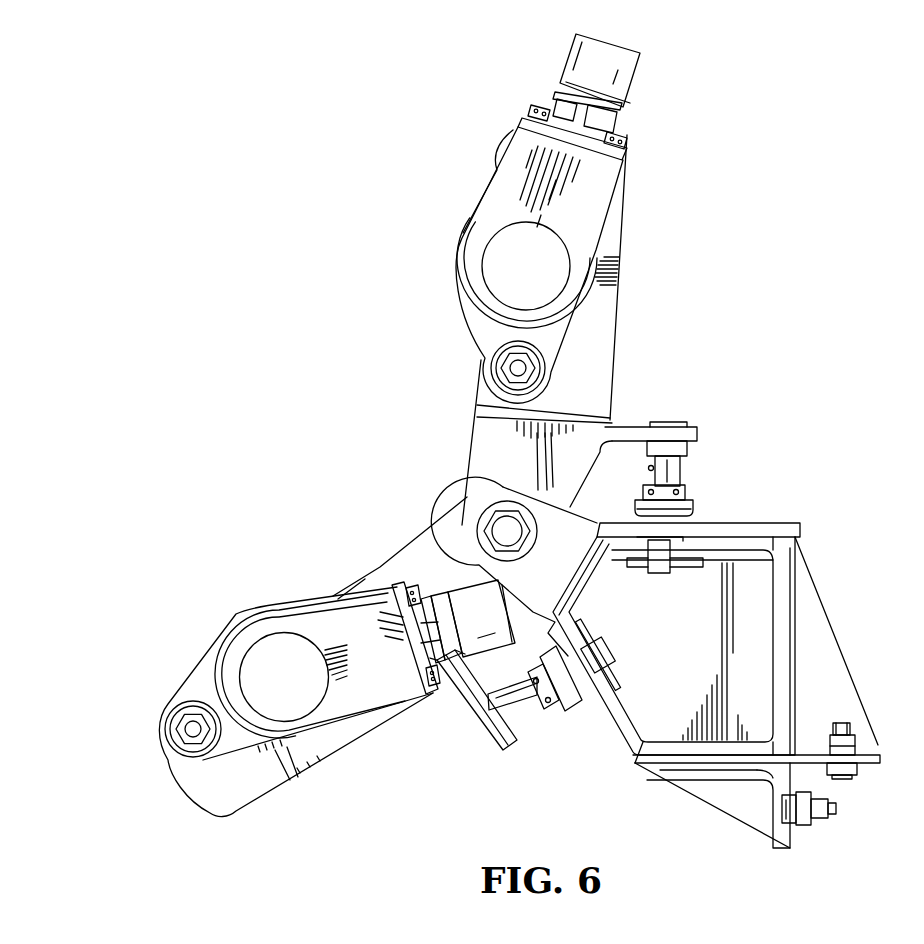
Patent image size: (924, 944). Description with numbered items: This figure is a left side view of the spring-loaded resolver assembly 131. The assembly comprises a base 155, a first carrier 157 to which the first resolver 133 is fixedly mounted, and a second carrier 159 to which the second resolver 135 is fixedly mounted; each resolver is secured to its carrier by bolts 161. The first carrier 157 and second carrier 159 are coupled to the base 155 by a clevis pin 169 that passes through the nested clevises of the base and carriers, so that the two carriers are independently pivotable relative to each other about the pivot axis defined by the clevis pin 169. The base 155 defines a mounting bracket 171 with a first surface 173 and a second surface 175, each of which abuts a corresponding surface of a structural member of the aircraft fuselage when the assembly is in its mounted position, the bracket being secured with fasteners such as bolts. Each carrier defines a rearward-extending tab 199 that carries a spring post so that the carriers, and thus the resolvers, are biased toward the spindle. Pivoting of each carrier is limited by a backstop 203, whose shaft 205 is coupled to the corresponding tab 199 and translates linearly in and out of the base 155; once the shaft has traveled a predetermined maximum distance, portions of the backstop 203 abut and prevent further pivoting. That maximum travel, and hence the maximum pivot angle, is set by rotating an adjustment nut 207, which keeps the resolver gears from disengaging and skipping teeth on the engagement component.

The resolver assembly 131 is at (846, 93).
The first resolver 133 is at (612, 217).
The second resolver 135 is at (367, 717).
The base 155 is at (780, 533).
The first carrier 157 is at (617, 352).
The second carrier 159 is at (400, 552).
The bolts 161 is at (191, 729).
The clevis pin 169 is at (505, 528).
The mounting bracket 171 is at (870, 747).
The first surface 173 is at (860, 770).
The second surface 175 is at (798, 843).
The tab 199 is at (698, 436).
The backstop 203 is at (660, 575).
The shaft 205 is at (683, 471).
The adjustment nut 207 is at (690, 492).